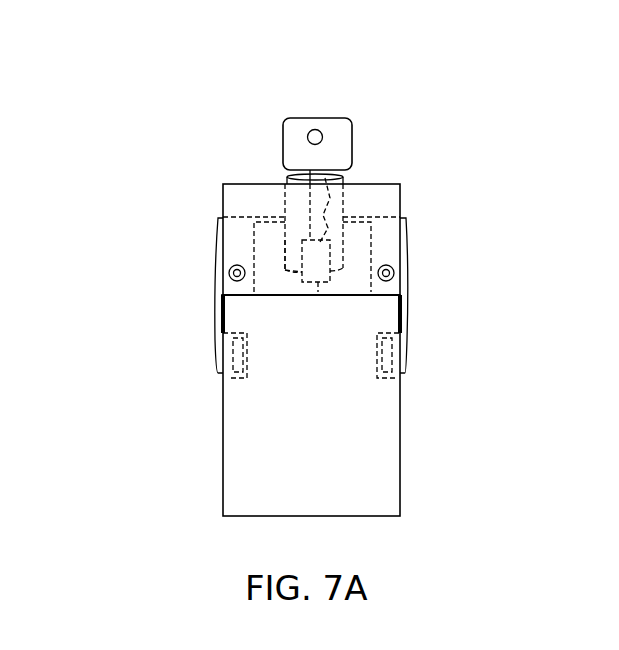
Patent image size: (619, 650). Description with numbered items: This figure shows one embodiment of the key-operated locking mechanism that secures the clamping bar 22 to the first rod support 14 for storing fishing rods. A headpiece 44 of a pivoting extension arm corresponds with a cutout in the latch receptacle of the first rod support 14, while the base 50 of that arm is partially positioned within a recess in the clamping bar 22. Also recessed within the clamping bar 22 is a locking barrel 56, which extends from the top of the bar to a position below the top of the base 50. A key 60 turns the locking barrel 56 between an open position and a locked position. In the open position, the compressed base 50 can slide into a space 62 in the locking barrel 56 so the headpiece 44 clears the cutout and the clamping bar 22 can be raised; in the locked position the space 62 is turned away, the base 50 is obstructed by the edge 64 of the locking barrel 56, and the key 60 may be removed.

The first rod support 14 is at (358, 468).
The clamping bar 22 is at (387, 198).
The headpiece 44 is at (232, 355).
The base 50 is at (385, 240).
The locking barrel 56 is at (293, 205).
The key 60 is at (297, 143).
The space 62 is at (317, 260).
The edge 64 is at (283, 247).